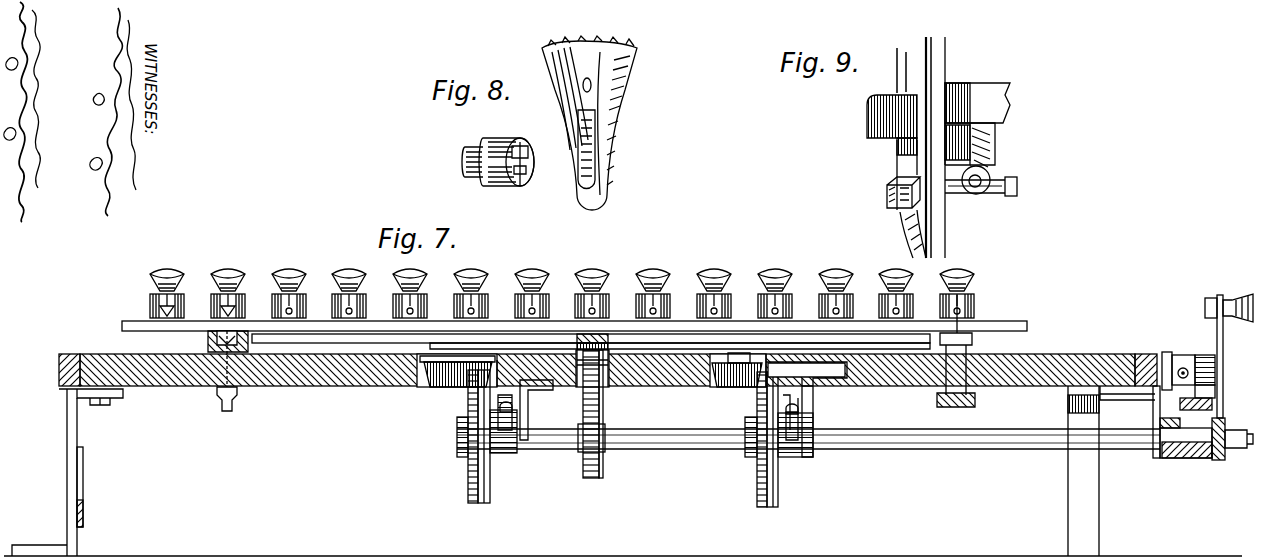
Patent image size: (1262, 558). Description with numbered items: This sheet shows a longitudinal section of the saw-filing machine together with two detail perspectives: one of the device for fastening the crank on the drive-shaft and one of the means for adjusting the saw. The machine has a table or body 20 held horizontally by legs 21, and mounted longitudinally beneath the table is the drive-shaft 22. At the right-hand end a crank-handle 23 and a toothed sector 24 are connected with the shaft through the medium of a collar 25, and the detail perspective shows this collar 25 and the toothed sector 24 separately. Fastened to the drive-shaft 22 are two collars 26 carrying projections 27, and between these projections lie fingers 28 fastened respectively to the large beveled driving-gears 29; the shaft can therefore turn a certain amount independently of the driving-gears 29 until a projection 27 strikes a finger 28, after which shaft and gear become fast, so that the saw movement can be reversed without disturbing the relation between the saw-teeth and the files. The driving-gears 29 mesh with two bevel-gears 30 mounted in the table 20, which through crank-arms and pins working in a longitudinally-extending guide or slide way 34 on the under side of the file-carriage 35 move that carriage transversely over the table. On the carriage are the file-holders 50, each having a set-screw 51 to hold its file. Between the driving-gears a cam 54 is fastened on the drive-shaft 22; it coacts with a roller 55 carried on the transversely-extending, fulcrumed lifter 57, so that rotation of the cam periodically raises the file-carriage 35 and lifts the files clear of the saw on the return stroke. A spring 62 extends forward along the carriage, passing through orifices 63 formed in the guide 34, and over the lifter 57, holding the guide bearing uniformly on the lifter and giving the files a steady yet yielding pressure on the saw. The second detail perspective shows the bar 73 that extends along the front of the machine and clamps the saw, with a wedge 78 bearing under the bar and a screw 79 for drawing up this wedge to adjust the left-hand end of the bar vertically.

In FIG. 7, the table or body 20 is at (1026, 372).
In FIG. 7, the legs 21 is at (1083, 471).
In FIG. 7, the drive-shaft 22 is at (973, 450).
In FIG. 7, the crank-handle 23 is at (1221, 372).
In FIG. 8, the toothed sector 24 is at (593, 87).
In FIG. 7, the toothed sector 24 is at (1209, 400).
In FIG. 8, the collar 25 is at (518, 170).
In FIG. 7, the collar 25 is at (1186, 458).
In FIG. 7, the collars 26 is at (505, 440).
In FIG. 7, the projections 27 is at (803, 424).
In FIG. 7, the fingers 28 is at (806, 404).
In FIG. 7, the large beveled driving-gears 29 is at (478, 503).
In FIG. 7, the bevel-gears 30 is at (439, 387).
In FIG. 7, the guide or slide way 34 is at (353, 335).
In FIG. 7, the file-carriage 35 is at (985, 327).
In FIG. 7, the file-holders 50 is at (791, 297).
In FIG. 7, the set-screws 51 is at (774, 286).
In FIG. 7, the cam 54 is at (604, 477).
In FIG. 7, the roller 55 is at (604, 397).
In FIG. 7, the lifter 57 is at (578, 352).
In FIG. 7, the spring 62 is at (594, 338).
In FIG. 7, the orifices 63 is at (680, 340).
In FIG. 9, the bar 73 is at (938, 119).
In FIG. 9, the wedge 78 is at (985, 143).
In FIG. 9, the screw 79 is at (961, 196).